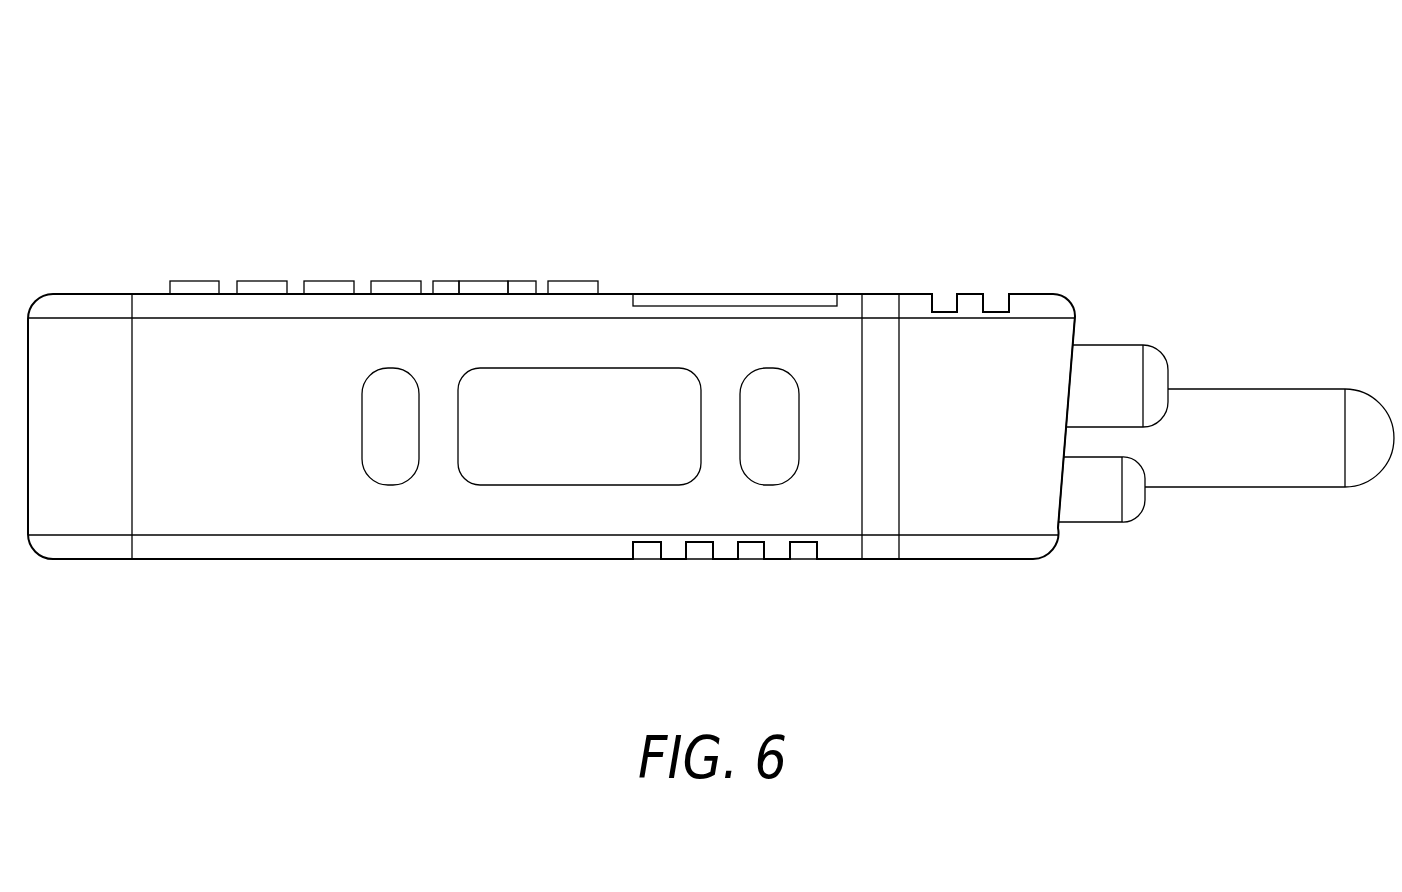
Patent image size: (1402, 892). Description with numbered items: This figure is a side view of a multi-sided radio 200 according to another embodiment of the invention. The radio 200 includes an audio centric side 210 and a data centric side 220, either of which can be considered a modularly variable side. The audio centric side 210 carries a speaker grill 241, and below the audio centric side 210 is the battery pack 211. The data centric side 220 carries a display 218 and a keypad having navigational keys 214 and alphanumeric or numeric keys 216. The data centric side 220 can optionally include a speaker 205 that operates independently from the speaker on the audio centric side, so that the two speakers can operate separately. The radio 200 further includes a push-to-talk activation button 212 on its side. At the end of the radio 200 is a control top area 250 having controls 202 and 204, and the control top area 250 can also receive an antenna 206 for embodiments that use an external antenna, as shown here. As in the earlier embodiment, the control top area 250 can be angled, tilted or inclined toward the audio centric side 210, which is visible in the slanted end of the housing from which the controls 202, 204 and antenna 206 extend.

The multi-sided radio 200 is at (152, 134).
The control 202 is at (1115, 523).
The control 204 is at (1111, 343).
The speaker 205 is at (942, 310).
The antenna 206 is at (1258, 388).
The audio centric side 210 is at (644, 582).
The battery pack 211 is at (360, 560).
The push-to-talk activation button 212 is at (488, 366).
The navigational keys 214 is at (485, 280).
The alphanumeric or numeric keys 216 is at (263, 280).
The display 218 is at (680, 284).
The data centric side 220 is at (850, 225).
The speaker grill 241 is at (698, 543).
The control top area 250 is at (1083, 556).